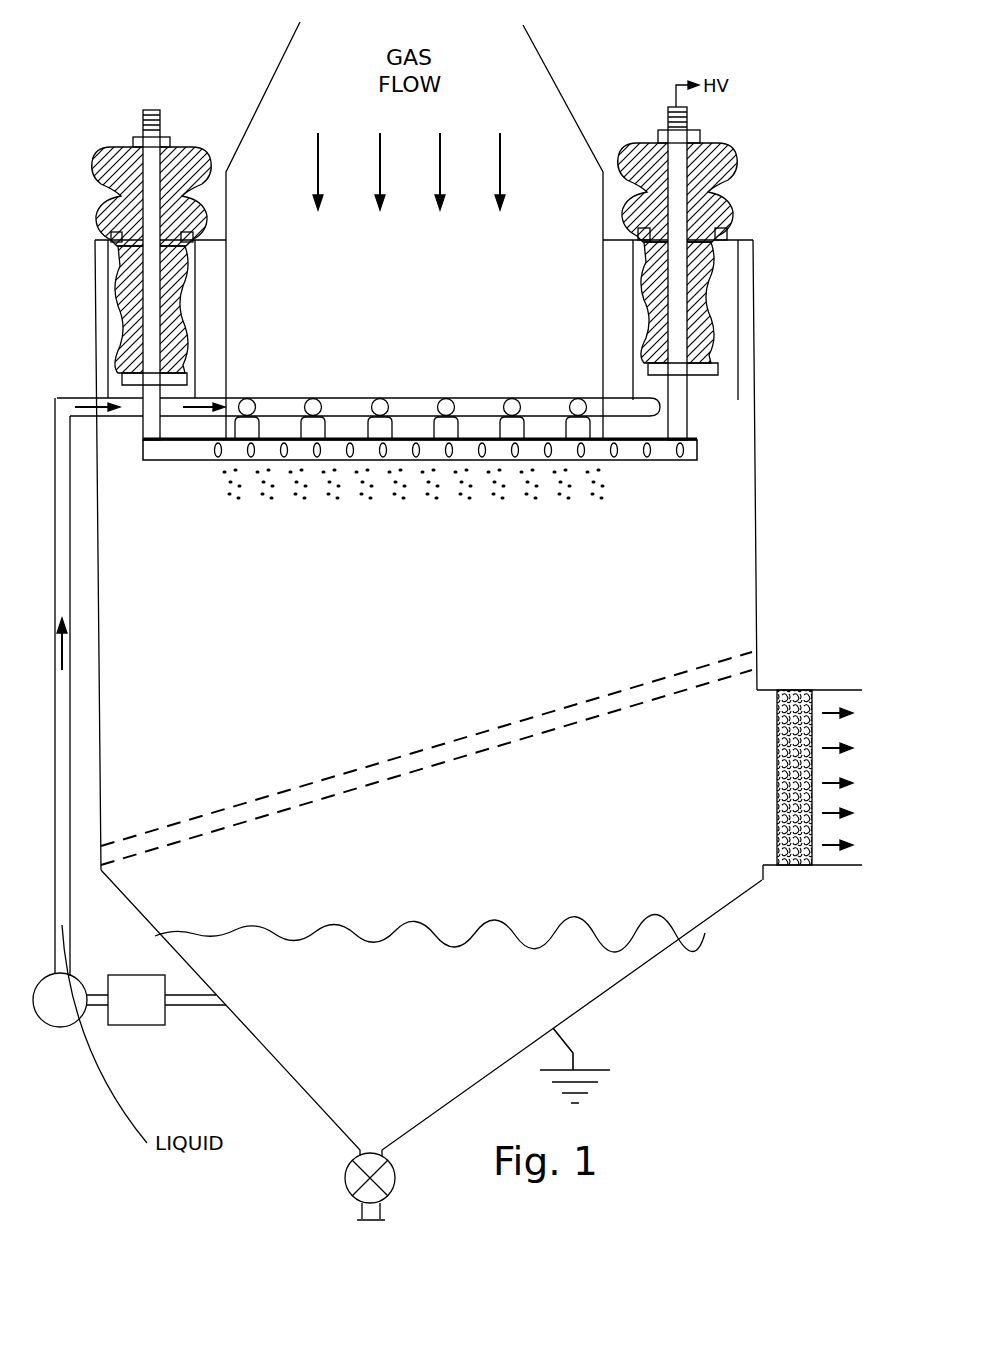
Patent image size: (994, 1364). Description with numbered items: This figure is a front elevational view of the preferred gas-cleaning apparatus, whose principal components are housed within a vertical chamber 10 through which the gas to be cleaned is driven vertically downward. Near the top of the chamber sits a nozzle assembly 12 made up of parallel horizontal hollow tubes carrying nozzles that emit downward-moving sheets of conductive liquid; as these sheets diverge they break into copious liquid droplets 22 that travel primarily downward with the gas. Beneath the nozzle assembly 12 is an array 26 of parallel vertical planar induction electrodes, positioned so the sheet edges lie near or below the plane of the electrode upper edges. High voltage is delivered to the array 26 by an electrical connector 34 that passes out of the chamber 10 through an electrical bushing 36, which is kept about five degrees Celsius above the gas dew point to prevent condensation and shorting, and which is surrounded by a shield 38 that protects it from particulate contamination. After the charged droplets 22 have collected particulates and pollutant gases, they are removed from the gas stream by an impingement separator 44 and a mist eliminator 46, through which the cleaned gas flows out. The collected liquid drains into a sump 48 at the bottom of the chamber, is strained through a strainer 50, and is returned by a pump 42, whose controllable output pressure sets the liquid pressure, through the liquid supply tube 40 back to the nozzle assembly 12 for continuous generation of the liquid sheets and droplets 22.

The vertical chamber 10 is at (751, 313).
The nozzle assembly 12 is at (538, 395).
The liquid droplets 22 is at (300, 470).
The array of induction electrodes 26 is at (545, 462).
The electrical connector 34 is at (150, 190).
The electrical bushing 36 is at (132, 200).
The shield 38 is at (195, 345).
The liquid supply tube 40 is at (62, 865).
The pump 42 is at (62, 1013).
The impingement separator 44 is at (676, 672).
The mist eliminator 46 is at (806, 852).
The sump 48 is at (605, 990).
The strainer 50 is at (130, 1015).